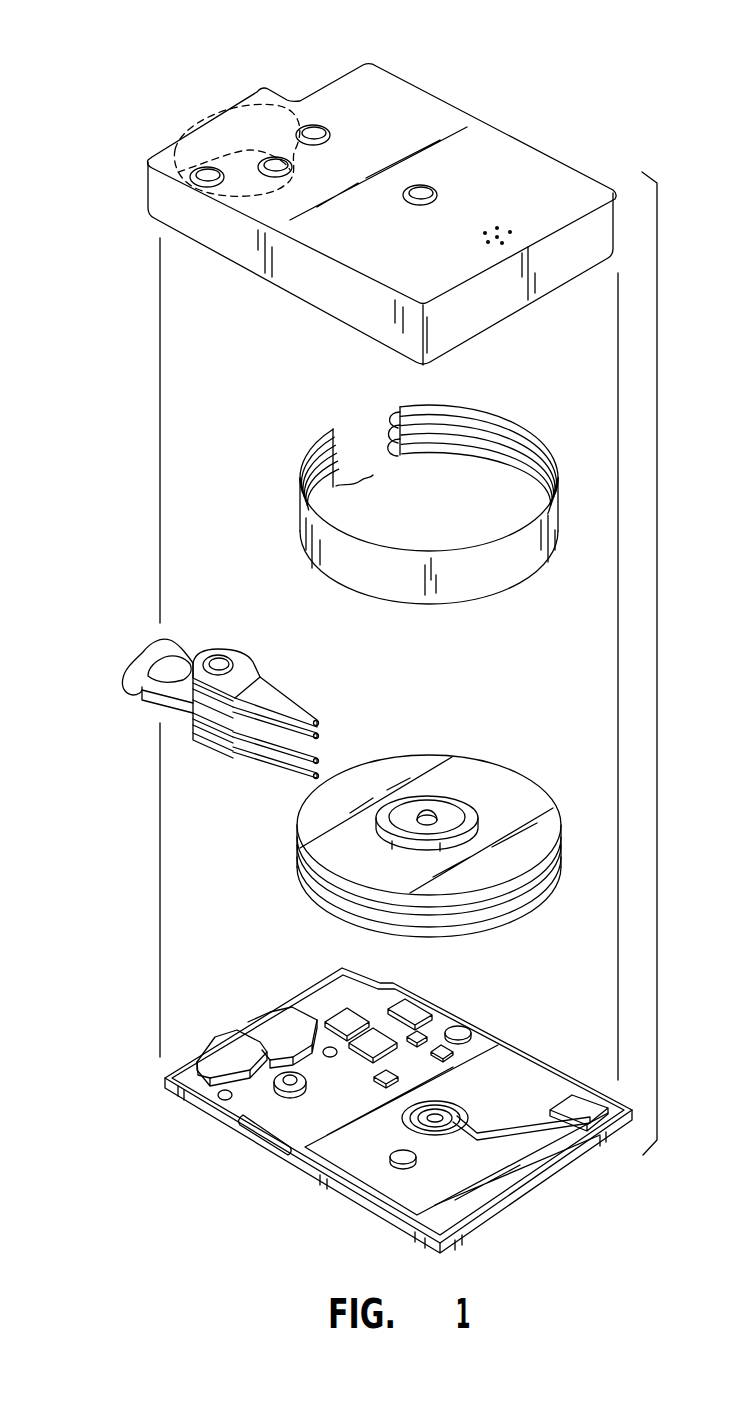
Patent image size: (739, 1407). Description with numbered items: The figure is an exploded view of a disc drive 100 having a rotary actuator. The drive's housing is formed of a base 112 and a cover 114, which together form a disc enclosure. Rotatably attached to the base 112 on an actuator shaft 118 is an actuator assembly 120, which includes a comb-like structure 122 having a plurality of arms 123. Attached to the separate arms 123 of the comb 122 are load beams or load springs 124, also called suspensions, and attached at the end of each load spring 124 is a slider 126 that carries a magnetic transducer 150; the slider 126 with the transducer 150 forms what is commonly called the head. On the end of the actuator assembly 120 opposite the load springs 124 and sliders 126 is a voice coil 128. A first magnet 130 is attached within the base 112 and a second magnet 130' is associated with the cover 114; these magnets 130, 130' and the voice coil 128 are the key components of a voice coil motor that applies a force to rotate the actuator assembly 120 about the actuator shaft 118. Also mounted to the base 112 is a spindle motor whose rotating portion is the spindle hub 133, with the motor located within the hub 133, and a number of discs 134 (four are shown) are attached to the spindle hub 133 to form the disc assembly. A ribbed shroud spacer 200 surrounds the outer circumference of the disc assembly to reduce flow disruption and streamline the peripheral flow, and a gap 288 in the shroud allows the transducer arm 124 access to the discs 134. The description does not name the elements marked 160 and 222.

The disc drive 100 is at (497, 83).
The base 112 is at (537, 1078).
The cover 114 is at (517, 160).
The actuator shaft 118 is at (220, 660).
The actuator assembly 120 is at (177, 705).
The comb-like structure 122 is at (233, 747).
The arms 123 is at (260, 677).
The load springs 124 is at (277, 698).
The slider 126 is at (317, 718).
The voice coil 128 is at (140, 665).
The first magnet 130 is at (231, 132).
The second magnet 130' is at (252, 1037).
The spindle hub 133 is at (433, 812).
The discs 134 is at (533, 797).
The magnetic transducer 150 is at (337, 715).
The electronic component 160 is at (413, 1010).
The shroud spacer 200 is at (497, 408).
The connector tabs 222 is at (390, 411).
The gap 288 is at (401, 455).